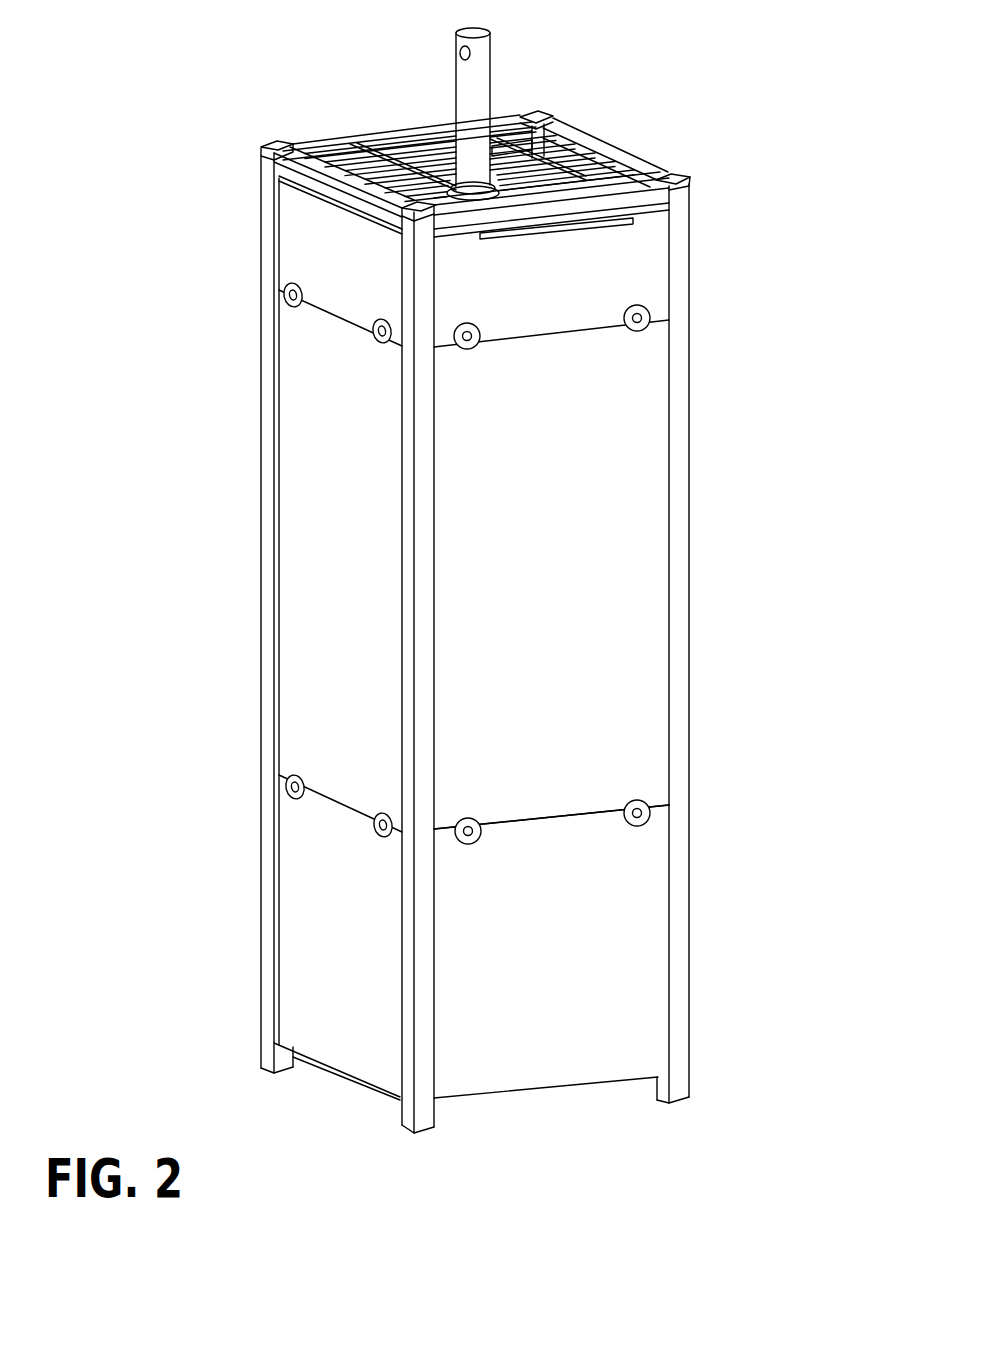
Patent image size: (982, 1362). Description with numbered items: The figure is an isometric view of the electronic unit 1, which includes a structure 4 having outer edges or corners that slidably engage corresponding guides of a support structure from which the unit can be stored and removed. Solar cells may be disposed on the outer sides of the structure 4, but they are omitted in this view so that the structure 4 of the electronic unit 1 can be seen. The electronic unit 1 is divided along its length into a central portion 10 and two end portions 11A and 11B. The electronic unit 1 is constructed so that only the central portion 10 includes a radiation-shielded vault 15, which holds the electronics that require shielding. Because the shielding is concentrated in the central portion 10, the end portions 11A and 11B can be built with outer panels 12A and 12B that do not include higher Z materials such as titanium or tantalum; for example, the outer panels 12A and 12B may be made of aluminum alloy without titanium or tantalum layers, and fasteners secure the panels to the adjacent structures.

The electronic unit 1 is at (695, 528).
The structure 4 is at (690, 620).
The central portion 10 is at (607, 668).
The end portion 11A is at (648, 268).
The end portion 11B is at (617, 893).
The outer panel 12A is at (302, 230).
The outer panel 12B is at (335, 1036).
The radiation-shielded vault 15 is at (548, 685).